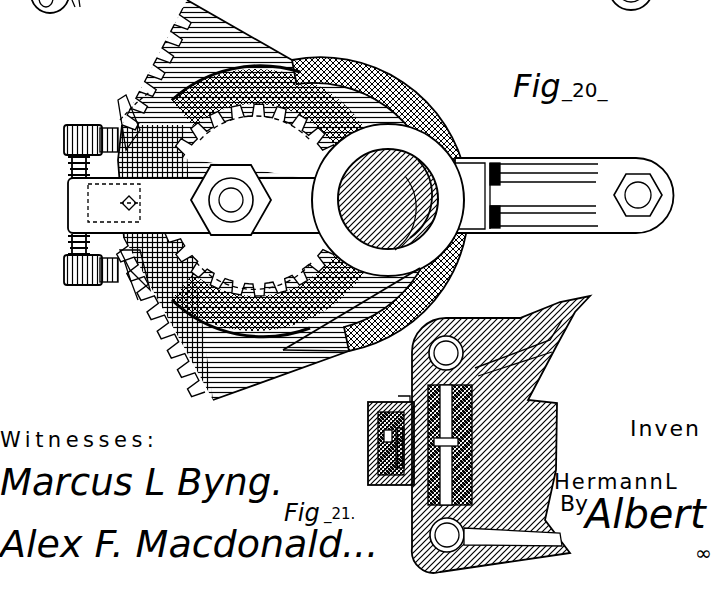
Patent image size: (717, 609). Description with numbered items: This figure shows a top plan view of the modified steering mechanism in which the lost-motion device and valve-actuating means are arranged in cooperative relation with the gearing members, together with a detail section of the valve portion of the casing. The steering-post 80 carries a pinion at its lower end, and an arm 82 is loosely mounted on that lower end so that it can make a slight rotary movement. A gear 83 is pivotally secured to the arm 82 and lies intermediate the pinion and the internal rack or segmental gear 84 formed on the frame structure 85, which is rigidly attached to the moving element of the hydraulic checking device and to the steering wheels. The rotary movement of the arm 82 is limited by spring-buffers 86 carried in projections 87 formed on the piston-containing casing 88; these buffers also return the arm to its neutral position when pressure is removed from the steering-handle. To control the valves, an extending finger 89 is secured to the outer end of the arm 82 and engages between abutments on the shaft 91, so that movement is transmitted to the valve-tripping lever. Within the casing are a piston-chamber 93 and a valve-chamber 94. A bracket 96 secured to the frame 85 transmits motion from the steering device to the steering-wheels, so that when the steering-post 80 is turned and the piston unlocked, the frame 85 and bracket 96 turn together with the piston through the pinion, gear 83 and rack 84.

In FIG. 20, the steering-post 80 is at (405, 180).
In FIG. 20, the arm 82 is at (203, 200).
In FIG. 20, the gear 83 is at (256, 200).
In FIG. 20, the internal rack or segmental gear 84 is at (168, 70).
In FIG. 20, the frame structure 85 is at (283, 365).
In FIG. 20, the spring-buffers 86 is at (66, 166).
In FIG. 20, the projections 87 is at (103, 132).
In FIG. 20, the piston-containing casing 88 is at (119, 119).
In FIG. 21, the extending finger 89 is at (368, 444).
In FIG. 20, the shaft 91 is at (78, 9).
In FIG. 21, the piston-chamber 93 is at (544, 385).
In FIG. 21, the valve-chamber 94 is at (427, 510).
In FIG. 20, the bracket 96 is at (567, 232).